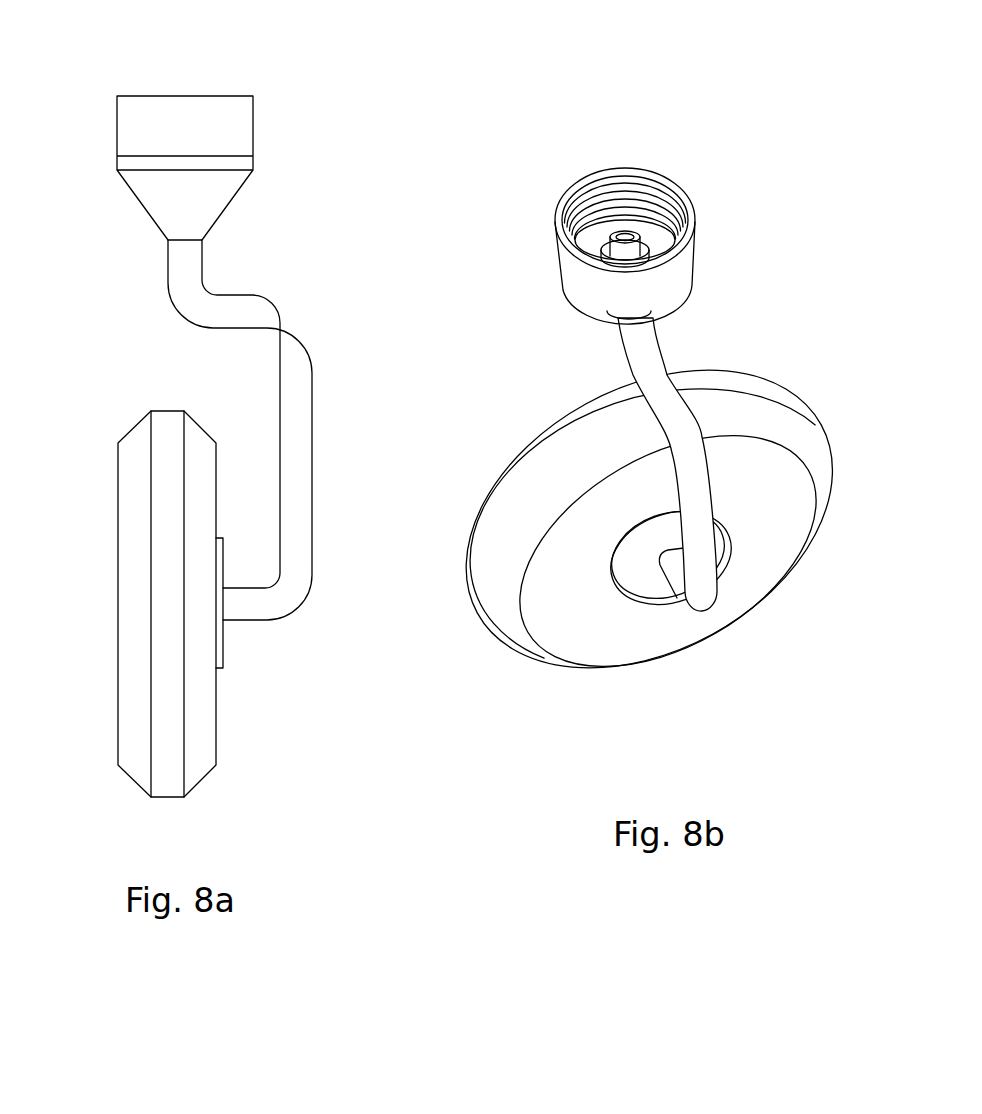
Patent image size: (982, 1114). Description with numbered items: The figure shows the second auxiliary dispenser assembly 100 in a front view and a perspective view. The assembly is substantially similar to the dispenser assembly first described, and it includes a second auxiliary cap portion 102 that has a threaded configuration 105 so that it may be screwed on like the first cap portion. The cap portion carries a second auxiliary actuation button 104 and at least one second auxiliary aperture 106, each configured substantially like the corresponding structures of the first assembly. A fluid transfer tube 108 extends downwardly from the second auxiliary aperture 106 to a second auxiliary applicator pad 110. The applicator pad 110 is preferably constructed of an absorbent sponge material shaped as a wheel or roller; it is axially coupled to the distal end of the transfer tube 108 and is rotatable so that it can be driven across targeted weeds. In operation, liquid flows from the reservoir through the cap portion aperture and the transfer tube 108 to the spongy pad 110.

In FIG. 8A, the second auxiliary dispenser assembly 100 is at (474, 197).
In FIG. 8A, the second auxiliary cap portion 102 is at (99, 115).
In FIG. 8B, the second auxiliary cap portion 102 is at (668, 192).
In FIG. 8B, the second auxiliary actuation button 104 is at (625, 235).
In FIG. 8B, the threaded configuration 105 is at (663, 213).
In FIG. 8B, the second auxiliary aperture 106 is at (595, 250).
In FIG. 8A, the fluid transfer tube 108 is at (295, 468).
In FIG. 8B, the fluid transfer tube 108 is at (680, 423).
In FIG. 8A, the second auxiliary applicator pad 110 is at (136, 590).
In FIG. 8B, the second auxiliary applicator pad 110 is at (593, 630).